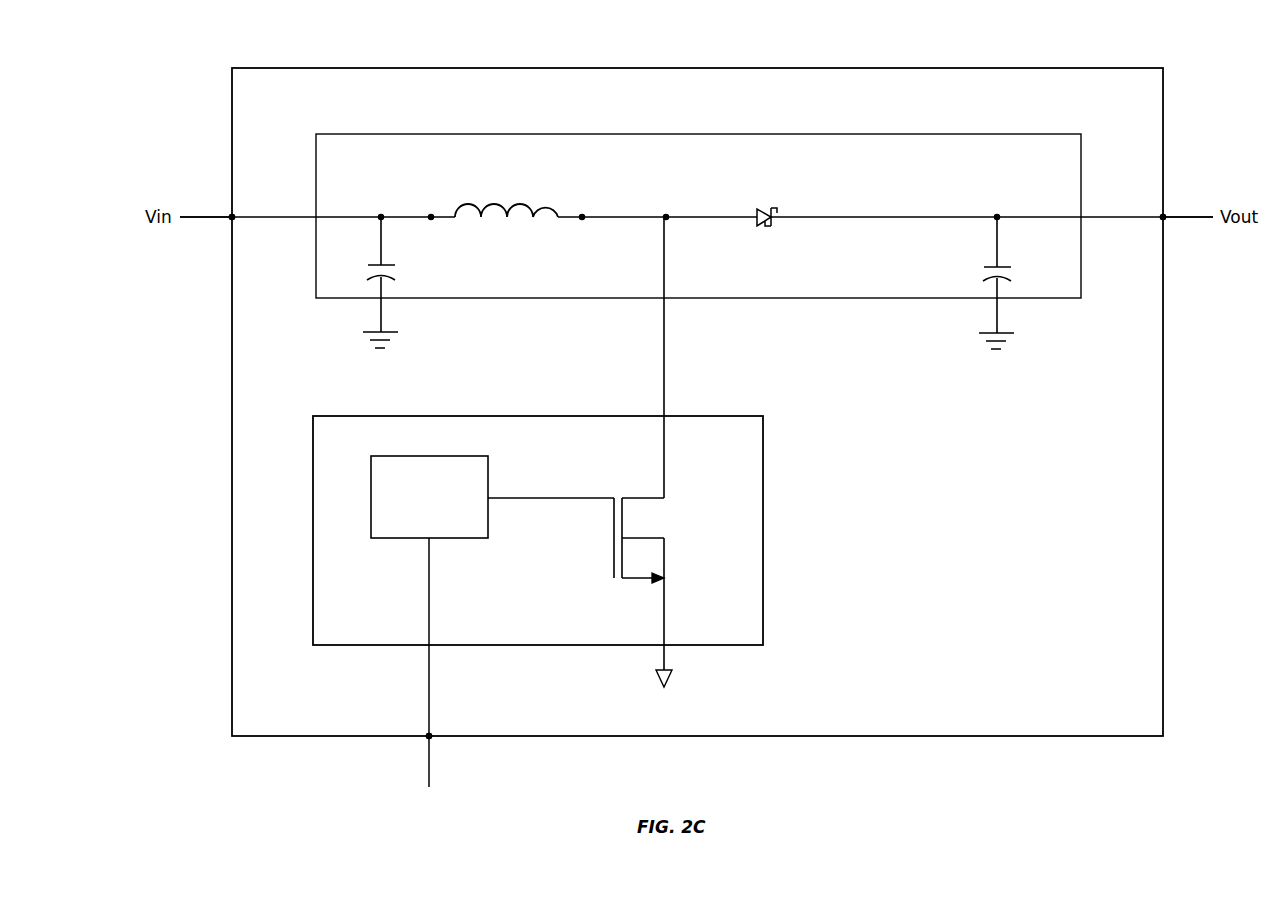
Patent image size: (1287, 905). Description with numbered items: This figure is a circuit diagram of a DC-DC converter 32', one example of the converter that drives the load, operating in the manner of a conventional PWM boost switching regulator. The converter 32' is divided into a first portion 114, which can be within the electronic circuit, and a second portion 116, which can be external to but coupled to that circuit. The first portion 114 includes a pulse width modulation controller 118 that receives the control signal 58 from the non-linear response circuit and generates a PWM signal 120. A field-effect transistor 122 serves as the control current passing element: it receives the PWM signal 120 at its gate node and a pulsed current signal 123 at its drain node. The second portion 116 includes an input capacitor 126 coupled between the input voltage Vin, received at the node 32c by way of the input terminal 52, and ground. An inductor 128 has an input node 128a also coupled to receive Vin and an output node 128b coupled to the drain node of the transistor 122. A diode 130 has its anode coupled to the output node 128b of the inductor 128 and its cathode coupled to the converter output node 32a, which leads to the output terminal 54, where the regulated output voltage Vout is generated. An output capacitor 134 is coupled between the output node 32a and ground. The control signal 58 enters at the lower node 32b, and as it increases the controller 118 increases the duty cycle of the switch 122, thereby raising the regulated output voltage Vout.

The DC-DC converter 32' is at (697, 385).
The second portion 116 is at (372, 134).
The input terminal 52 is at (206, 217).
The node 32c is at (232, 217).
The input node 128a is at (429, 216).
The inductor 128 is at (508, 215).
The output node 128b is at (585, 216).
The diode 130 is at (766, 211).
The input capacitor 126 is at (396, 276).
The output capacitor 134 is at (986, 278).
The output terminal 54 is at (1186, 217).
The converter output node 32a is at (1166, 221).
The pulsed current signal 123 is at (664, 366).
The first portion 114 is at (486, 416).
The pulse width modulation controller 118 is at (429, 497).
The PWM signal 120 is at (541, 506).
The field-effect transistor 122 is at (638, 497).
The control node 32b is at (428, 738).
The control signal 58 is at (430, 770).